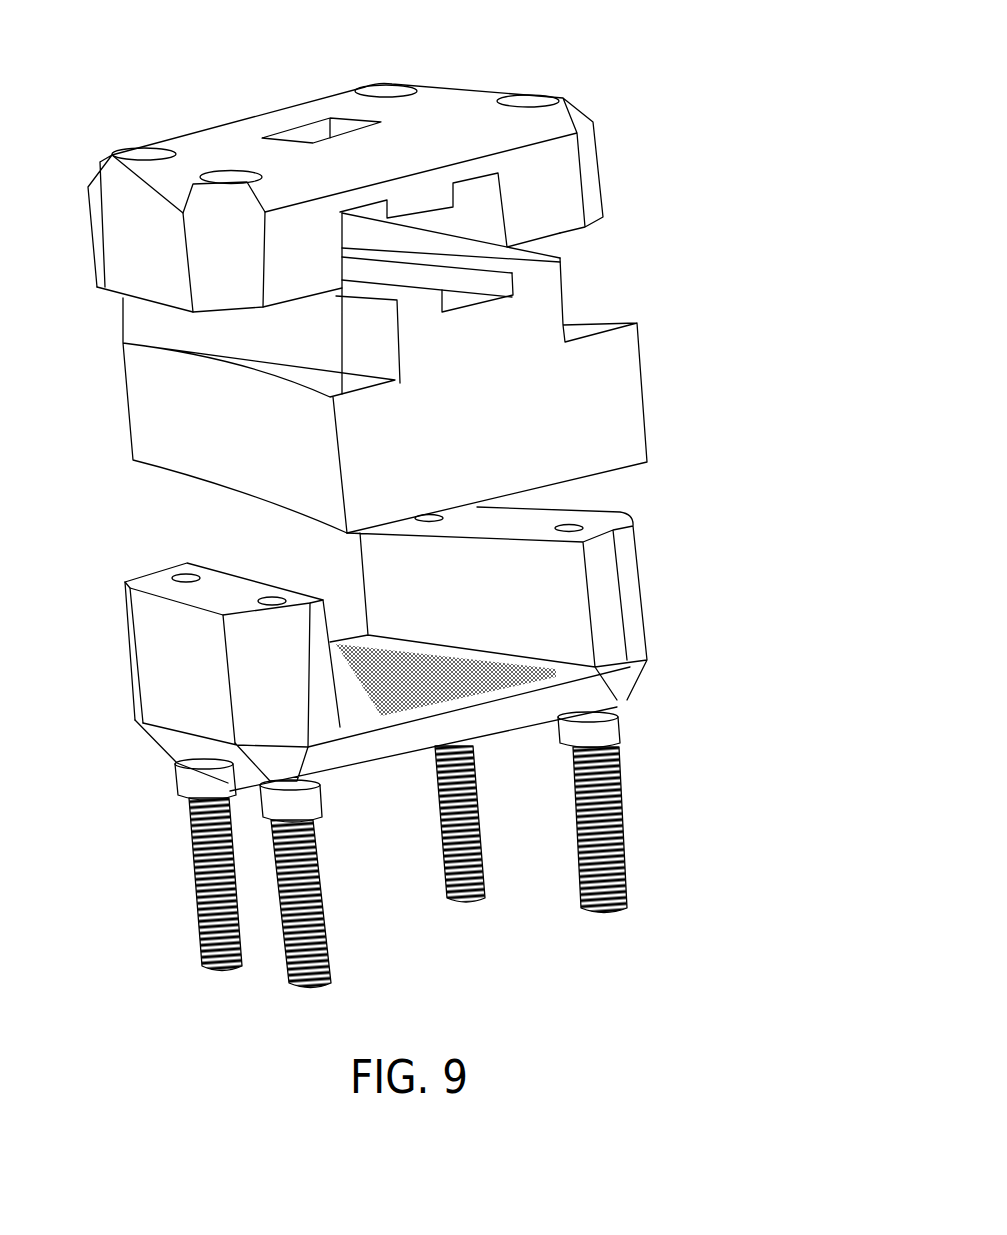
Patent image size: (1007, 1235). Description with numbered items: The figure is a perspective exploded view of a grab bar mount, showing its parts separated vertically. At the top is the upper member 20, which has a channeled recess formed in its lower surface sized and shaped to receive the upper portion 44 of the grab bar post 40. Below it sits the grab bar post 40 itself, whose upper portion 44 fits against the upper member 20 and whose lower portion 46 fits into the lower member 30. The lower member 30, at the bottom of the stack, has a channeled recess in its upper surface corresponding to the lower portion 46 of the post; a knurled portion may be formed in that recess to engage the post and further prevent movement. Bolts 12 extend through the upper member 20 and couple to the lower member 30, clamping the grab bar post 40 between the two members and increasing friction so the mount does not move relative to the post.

The upper member 20 is at (578, 143).
The grab bar post 40 is at (165, 412).
The lower portion of the grab bar post 46 is at (663, 392).
The upper portion of the grab bar post 44 is at (580, 261).
The lower member 30 is at (630, 595).
The bolts 12 is at (620, 835).